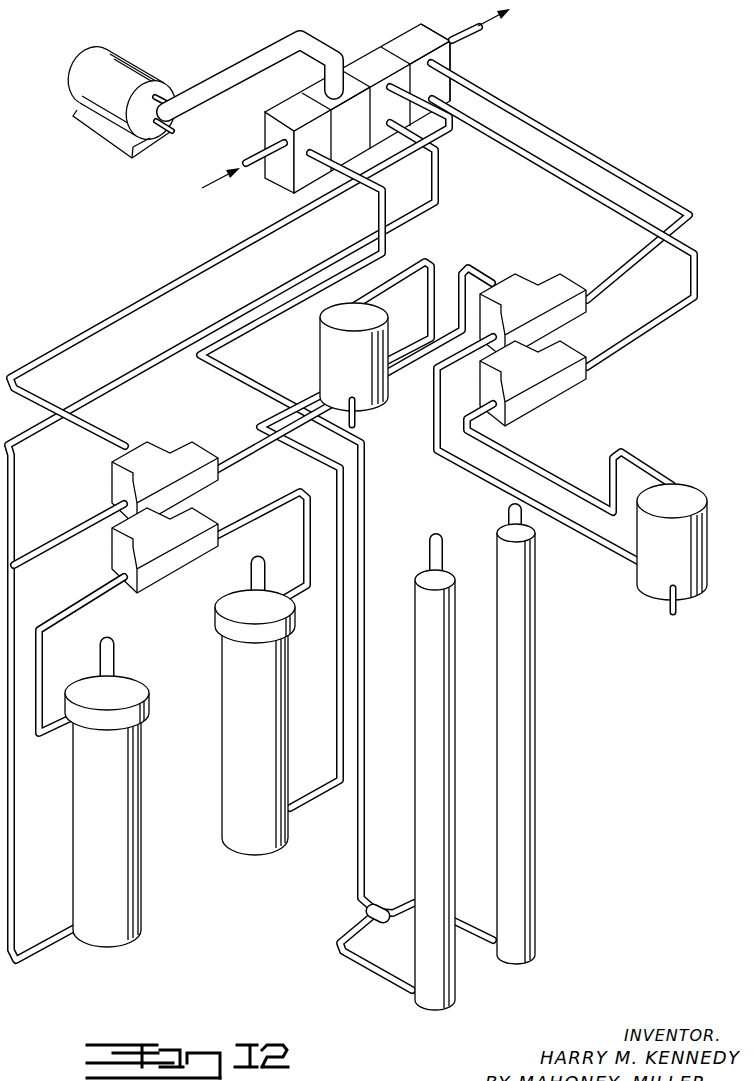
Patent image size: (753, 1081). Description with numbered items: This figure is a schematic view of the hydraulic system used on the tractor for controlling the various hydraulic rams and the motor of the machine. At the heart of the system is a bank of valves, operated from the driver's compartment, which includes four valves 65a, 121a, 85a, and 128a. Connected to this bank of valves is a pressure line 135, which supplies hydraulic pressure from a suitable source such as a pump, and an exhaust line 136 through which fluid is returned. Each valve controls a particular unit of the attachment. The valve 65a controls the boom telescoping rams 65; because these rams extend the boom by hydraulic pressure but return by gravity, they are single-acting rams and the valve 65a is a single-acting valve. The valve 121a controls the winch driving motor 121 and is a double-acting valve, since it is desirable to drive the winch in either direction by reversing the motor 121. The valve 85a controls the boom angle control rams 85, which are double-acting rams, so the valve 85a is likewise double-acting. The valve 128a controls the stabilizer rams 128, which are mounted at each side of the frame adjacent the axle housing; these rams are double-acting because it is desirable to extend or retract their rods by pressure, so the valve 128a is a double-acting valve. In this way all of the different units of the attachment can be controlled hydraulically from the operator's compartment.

The winch driving motor 121 is at (88, 58).
The valve 121a is at (313, 90).
The valve 65a is at (264, 118).
The valve 85a is at (367, 62).
The valve 128a is at (420, 33).
The pressure line 135 is at (258, 167).
The exhaust line 136 is at (480, 40).
The stabilizer ram 128 is at (385, 416).
The boom angle control ram 85 is at (150, 907).
The boom telescoping ram 65 is at (460, 977).